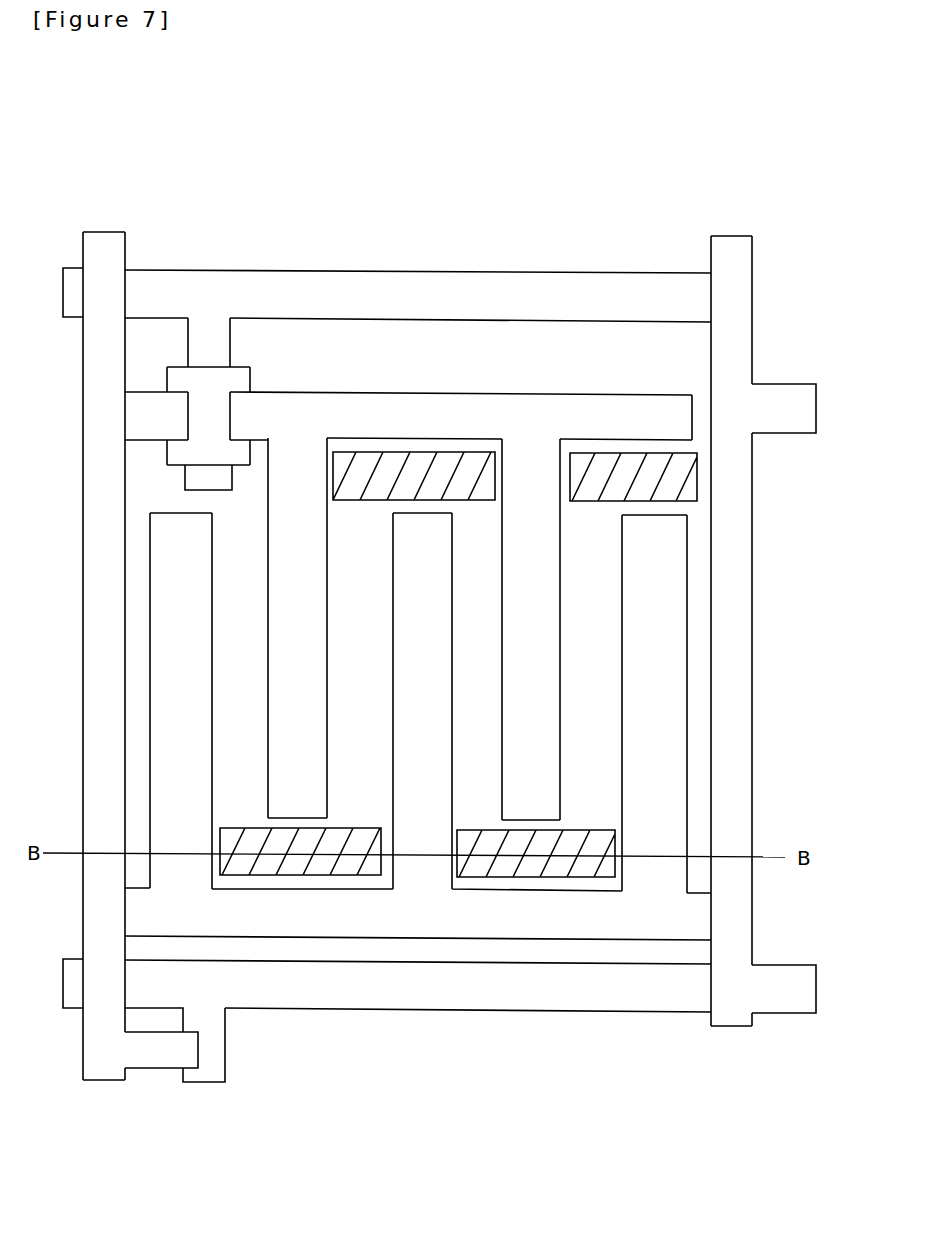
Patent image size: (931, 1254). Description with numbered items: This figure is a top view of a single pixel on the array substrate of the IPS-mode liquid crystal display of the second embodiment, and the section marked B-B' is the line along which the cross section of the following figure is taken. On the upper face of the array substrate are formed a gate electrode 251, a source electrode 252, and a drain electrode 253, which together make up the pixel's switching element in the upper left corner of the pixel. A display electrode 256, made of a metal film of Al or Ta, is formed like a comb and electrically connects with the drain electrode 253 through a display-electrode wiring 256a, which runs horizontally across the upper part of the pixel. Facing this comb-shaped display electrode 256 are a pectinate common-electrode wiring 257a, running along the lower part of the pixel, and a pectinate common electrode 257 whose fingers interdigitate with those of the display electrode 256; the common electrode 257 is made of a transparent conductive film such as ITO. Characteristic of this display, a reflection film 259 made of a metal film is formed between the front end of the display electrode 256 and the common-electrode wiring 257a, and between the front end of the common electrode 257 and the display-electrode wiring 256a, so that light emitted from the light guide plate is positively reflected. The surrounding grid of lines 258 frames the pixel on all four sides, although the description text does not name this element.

The gate electrode 251 is at (208, 345).
The source electrode 252 is at (150, 418).
The drain electrode 253 is at (250, 412).
The display electrode 256 is at (290, 578).
The display-electrode wiring 256a is at (462, 403).
The common electrode 257 is at (410, 678).
The common-electrode wiring 257a is at (525, 914).
The light shielding layer 258 is at (408, 290).
The reflection film 259 is at (352, 505).